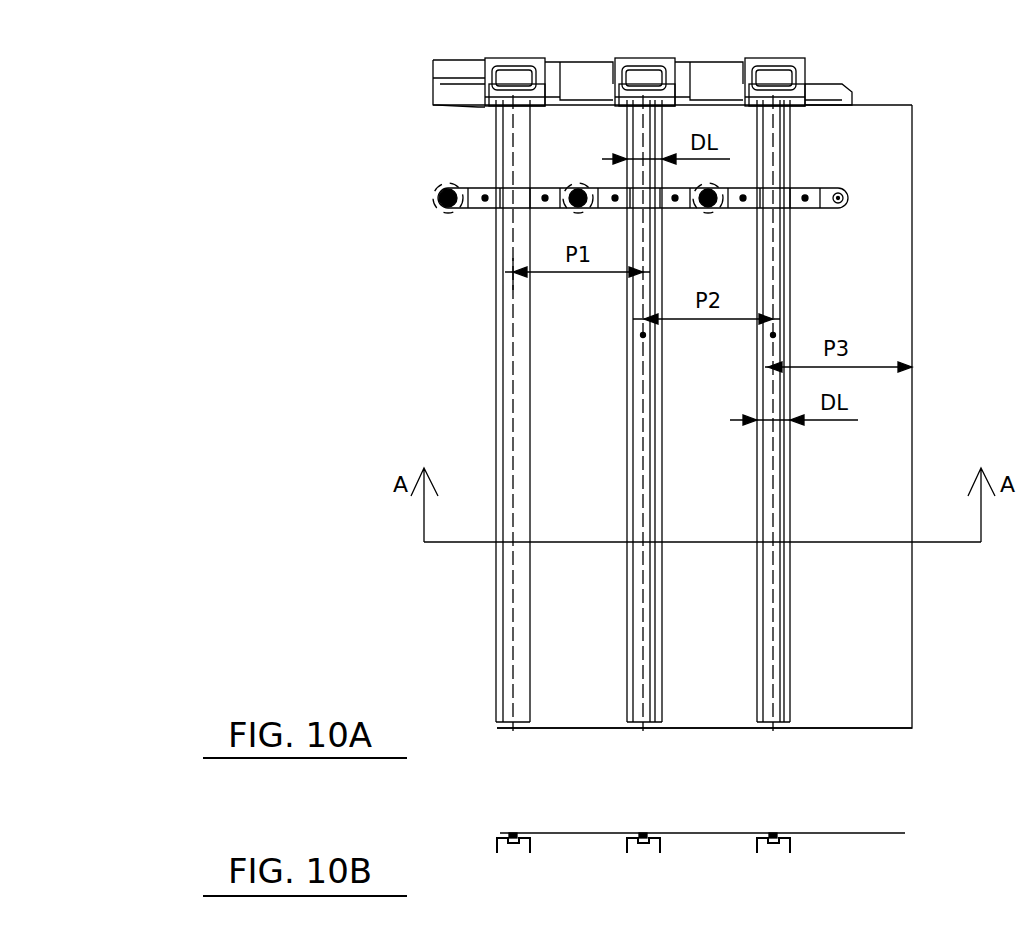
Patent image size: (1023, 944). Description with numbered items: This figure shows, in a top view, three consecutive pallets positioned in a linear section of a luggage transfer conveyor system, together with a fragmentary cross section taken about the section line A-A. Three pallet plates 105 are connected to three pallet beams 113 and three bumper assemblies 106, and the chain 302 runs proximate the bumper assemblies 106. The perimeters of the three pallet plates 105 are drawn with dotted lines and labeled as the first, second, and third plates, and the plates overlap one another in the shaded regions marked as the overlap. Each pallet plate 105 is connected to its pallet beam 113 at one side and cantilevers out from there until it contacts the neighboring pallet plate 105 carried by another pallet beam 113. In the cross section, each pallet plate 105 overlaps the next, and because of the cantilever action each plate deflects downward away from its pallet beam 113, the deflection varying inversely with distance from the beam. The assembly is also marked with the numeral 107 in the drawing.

In FIG. 10A, the pallet plate 105 is at (650, 500).
In FIG. 10B, the pallet plate 105 is at (520, 832).
In FIG. 10A, the bumper assembly 106 is at (768, 58).
In FIG. 10A, the carrier assembly 107 is at (484, 722).
In FIG. 10A, the pallet beam 113 is at (525, 622).
In FIG. 10B, the pallet beam 113 is at (530, 852).
In FIG. 10A, the chain 302 is at (455, 208).